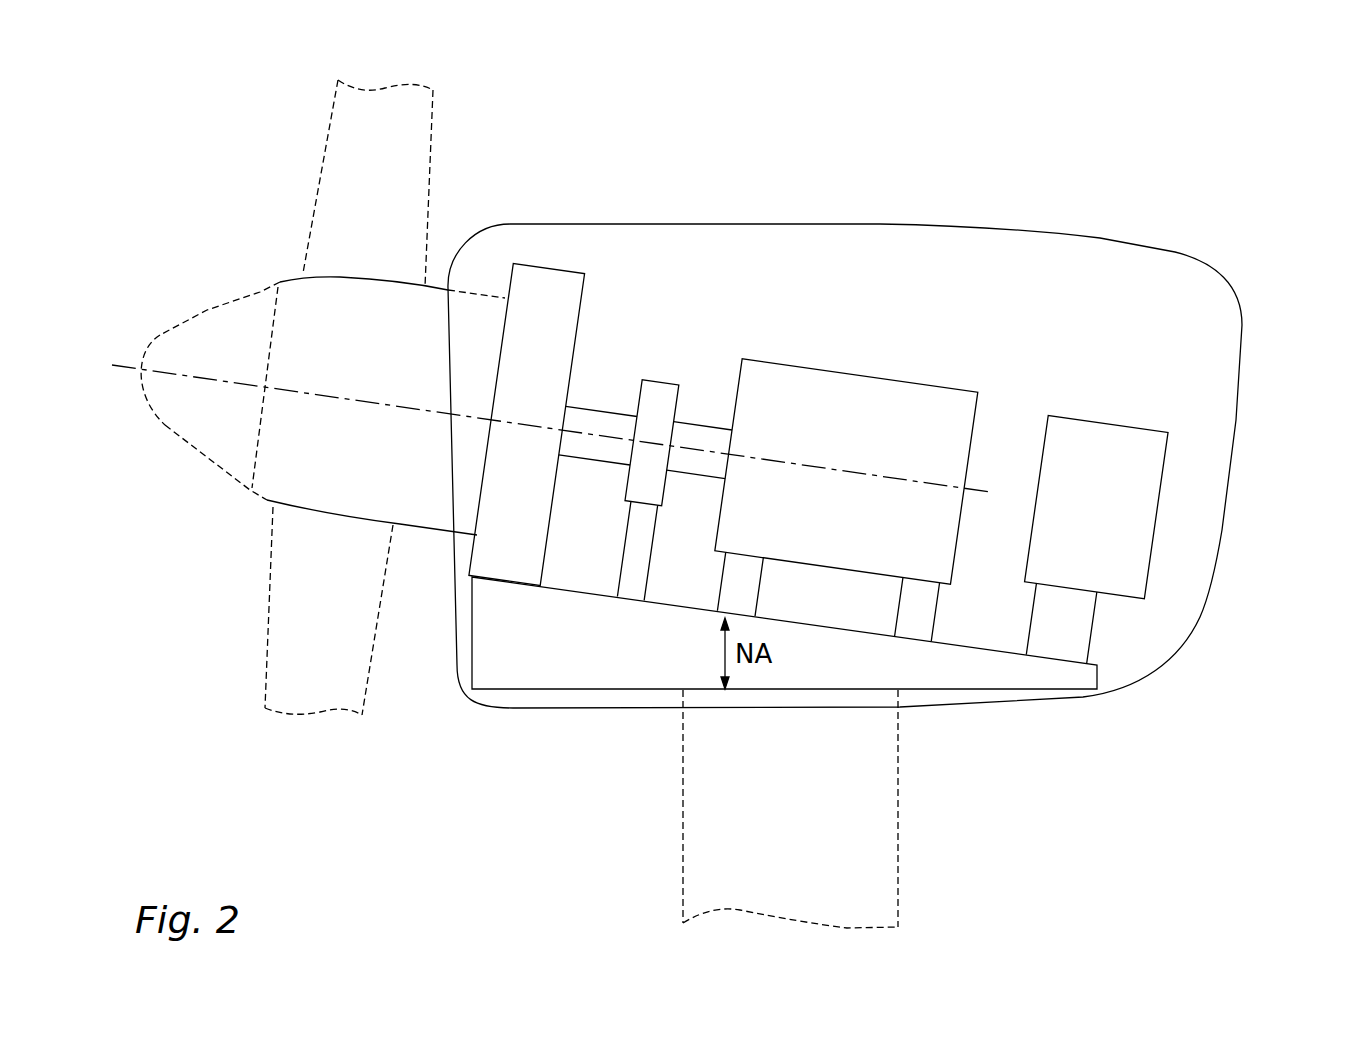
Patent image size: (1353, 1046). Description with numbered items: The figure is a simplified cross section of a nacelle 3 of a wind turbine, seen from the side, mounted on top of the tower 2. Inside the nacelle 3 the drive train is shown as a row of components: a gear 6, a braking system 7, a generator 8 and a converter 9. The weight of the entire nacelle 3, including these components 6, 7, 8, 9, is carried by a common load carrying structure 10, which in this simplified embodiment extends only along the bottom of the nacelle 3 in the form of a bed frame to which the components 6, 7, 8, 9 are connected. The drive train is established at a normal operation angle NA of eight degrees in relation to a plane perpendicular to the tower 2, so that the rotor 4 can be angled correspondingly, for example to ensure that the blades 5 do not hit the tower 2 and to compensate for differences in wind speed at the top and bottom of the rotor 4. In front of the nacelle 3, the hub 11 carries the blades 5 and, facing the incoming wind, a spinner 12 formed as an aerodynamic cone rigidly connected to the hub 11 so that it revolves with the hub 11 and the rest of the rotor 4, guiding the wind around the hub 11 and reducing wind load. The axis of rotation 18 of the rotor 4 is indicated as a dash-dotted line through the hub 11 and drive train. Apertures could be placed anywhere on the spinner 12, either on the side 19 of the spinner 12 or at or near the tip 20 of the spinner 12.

The tower 2 is at (818, 858).
The nacelle 3 is at (1275, 263).
The rotor 4 is at (280, 270).
The blades 5 is at (393, 173).
The gear 6 is at (547, 300).
The breaking system 7 is at (658, 403).
The generator 8 is at (812, 418).
The converter 9 is at (1115, 470).
The load carrying structure 10 is at (1050, 677).
The hub 11 is at (285, 460).
The spinner 12 is at (200, 413).
The axis of rotation 18 is at (867, 463).
The side 19 is at (213, 310).
The tip 20 is at (142, 353).